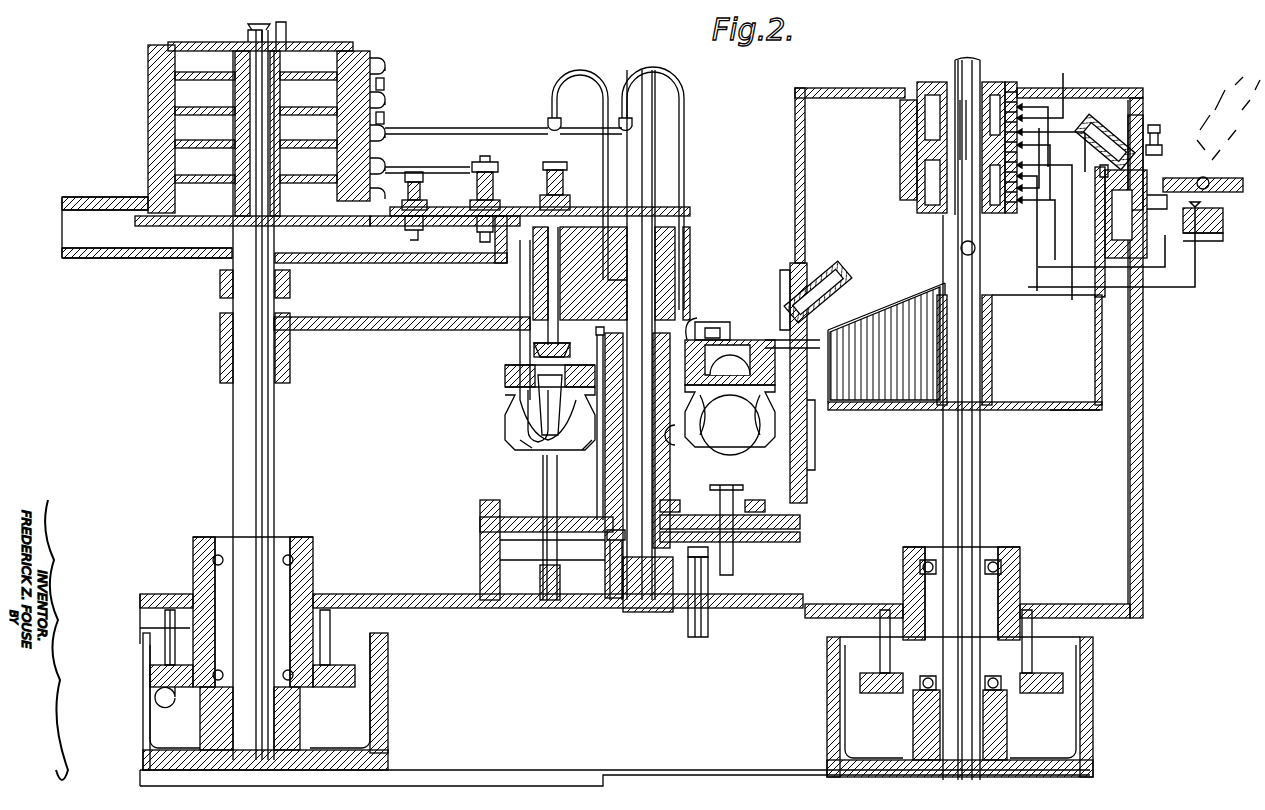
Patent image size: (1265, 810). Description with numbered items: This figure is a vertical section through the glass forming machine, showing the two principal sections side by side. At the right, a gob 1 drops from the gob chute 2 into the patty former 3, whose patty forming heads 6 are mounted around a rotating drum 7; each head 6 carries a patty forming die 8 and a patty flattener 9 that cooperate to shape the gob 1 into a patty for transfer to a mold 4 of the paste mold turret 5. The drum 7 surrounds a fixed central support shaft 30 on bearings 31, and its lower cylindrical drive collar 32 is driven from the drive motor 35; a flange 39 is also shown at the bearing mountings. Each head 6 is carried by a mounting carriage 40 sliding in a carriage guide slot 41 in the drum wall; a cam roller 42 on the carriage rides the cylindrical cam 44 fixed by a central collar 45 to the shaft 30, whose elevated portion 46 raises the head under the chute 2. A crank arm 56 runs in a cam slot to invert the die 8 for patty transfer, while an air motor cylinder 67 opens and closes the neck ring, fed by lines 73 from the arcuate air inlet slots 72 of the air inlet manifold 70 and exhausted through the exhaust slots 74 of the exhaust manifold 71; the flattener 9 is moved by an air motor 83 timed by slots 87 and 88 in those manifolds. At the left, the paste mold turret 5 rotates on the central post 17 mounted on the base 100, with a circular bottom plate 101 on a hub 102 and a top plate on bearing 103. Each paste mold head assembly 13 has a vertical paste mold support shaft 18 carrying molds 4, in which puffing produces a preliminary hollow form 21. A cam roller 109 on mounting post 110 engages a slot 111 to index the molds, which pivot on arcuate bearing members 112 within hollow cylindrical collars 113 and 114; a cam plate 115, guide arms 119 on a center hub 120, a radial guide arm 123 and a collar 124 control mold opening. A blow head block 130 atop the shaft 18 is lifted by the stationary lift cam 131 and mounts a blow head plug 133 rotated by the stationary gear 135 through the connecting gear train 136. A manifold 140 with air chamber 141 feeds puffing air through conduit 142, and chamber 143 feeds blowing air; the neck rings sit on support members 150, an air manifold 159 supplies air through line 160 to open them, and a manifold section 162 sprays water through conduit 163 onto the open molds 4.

The gob 1 is at (1220, 173).
The gob chute 2 is at (1228, 111).
The patty former 3 is at (1178, 437).
The mold 4 is at (520, 440).
The paste mold turret 5 is at (725, 200).
The patty forming head 6 is at (1232, 192).
The rotating drum 7 is at (1140, 512).
The patty forming die 8 is at (1230, 178).
The patty flattener 9 is at (1170, 148).
The paste mold head assembly 13 is at (712, 300).
The central post 17 is at (263, 442).
The paste mold support shaft 18 is at (690, 270).
The preliminary hollow form 21 is at (538, 440).
The central support shaft 30 is at (965, 515).
The bearings 31 is at (1008, 567).
The cylindrical drive collar 32 is at (1020, 600).
The drive motor 35 is at (308, 570).
The flange 39 is at (355, 680).
The mounting carriage 40 is at (1147, 248).
The carriage guide slot 41 is at (806, 180).
The cam roller 42 is at (1095, 186).
The cylindrical cam 44 is at (1043, 410).
The central collar 45 is at (992, 360).
The elevated portion 46 is at (1100, 180).
The crank arm 56 is at (816, 452).
The cylinder 67 is at (1222, 238).
The air inlet manifold 70 is at (1015, 95).
The exhaust manifold 71 is at (997, 210).
The arcuate air inlet slots 72 is at (950, 100).
The lines 73 is at (1165, 270).
The exhaust slots 74 is at (978, 212).
The air motor 83 is at (1128, 82).
The slot 87 is at (987, 125).
The slot 88 is at (952, 192).
The base 100 is at (497, 700).
The circular bottom plate 101 is at (370, 594).
The hub 102 is at (328, 291).
The bearing 103 is at (220, 285).
The cam roller 109 is at (708, 560).
The mounting post 110 is at (705, 626).
The slot 111 is at (737, 545).
The arcuate bearing members 112 is at (674, 460).
The hollow cylindrical collar 113 is at (730, 420).
The hollow cylindrical collar 114 is at (598, 478).
The cam plate 115 is at (768, 502).
The radially directed guide arm 119 is at (773, 523).
The center hub 120 is at (671, 600).
The radial guide arm 123 is at (793, 542).
The collar 124 is at (595, 595).
The block 130 is at (622, 235).
The stationary lift cam 131 is at (496, 330).
The blow head plug 133 is at (550, 340).
The stationary gear 135 is at (362, 233).
The connecting gear train 136 is at (500, 172).
The manifold 140 is at (320, 41).
The air chamber 141 is at (380, 96).
The conduit 142 is at (572, 76).
The chamber 143 is at (380, 63).
The support member 150 is at (528, 420).
The air manifold 159 is at (383, 128).
The line 160 is at (683, 97).
The manifold section 162 is at (320, 224).
The conduit 163 is at (447, 160).